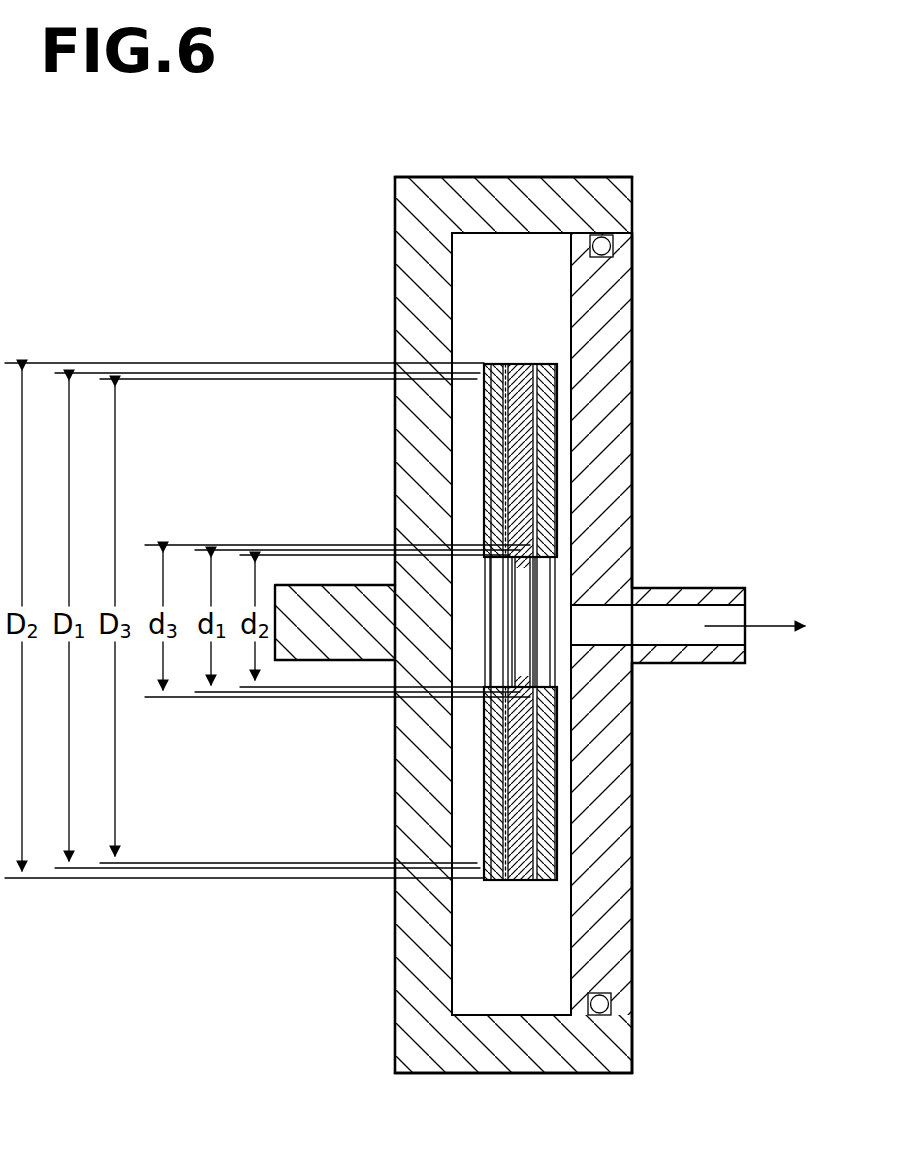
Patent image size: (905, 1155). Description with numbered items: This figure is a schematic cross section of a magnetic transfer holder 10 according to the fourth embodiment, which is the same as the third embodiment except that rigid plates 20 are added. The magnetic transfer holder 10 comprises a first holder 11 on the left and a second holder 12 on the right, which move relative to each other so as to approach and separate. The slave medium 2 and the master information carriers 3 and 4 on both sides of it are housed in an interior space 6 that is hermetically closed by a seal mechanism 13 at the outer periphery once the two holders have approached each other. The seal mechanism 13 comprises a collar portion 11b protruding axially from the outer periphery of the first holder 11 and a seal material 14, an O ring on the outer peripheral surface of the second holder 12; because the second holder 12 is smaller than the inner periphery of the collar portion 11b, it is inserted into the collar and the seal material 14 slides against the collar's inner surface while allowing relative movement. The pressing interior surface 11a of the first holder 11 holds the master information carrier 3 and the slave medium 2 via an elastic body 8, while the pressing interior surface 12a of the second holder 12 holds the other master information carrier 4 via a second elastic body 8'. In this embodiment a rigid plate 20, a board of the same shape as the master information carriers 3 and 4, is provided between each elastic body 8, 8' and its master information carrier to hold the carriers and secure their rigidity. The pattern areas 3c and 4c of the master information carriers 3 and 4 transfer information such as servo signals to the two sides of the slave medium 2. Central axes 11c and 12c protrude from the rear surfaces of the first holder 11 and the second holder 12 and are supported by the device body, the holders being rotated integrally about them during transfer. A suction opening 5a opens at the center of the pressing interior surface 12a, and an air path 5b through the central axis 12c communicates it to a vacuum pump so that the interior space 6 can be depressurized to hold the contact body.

The magnetic transfer holder 10 is at (384, 116).
The first holder 11 is at (390, 332).
The pressing interior surface 11a is at (450, 944).
The collar portion 11b is at (524, 181).
The central axis 11c is at (318, 662).
The second holder 12 is at (637, 357).
The pressing interior surface 12a is at (563, 924).
The central axis 12c is at (712, 594).
The seal mechanism 13 is at (608, 226).
The seal material 14 is at (613, 247).
The interior space 6 is at (467, 262).
The slave medium 2 is at (519, 364).
The master information carrier 3 is at (492, 364).
The pattern area 3c is at (505, 364).
The master information carrier 4 is at (553, 364).
The pattern area 4c is at (536, 364).
The elastic body 8 is at (454, 587).
The elastic body 8' is at (576, 655).
The rigid plate 20 is at (555, 585).
The suction opening 5a is at (637, 661).
The air path 5b is at (696, 640).